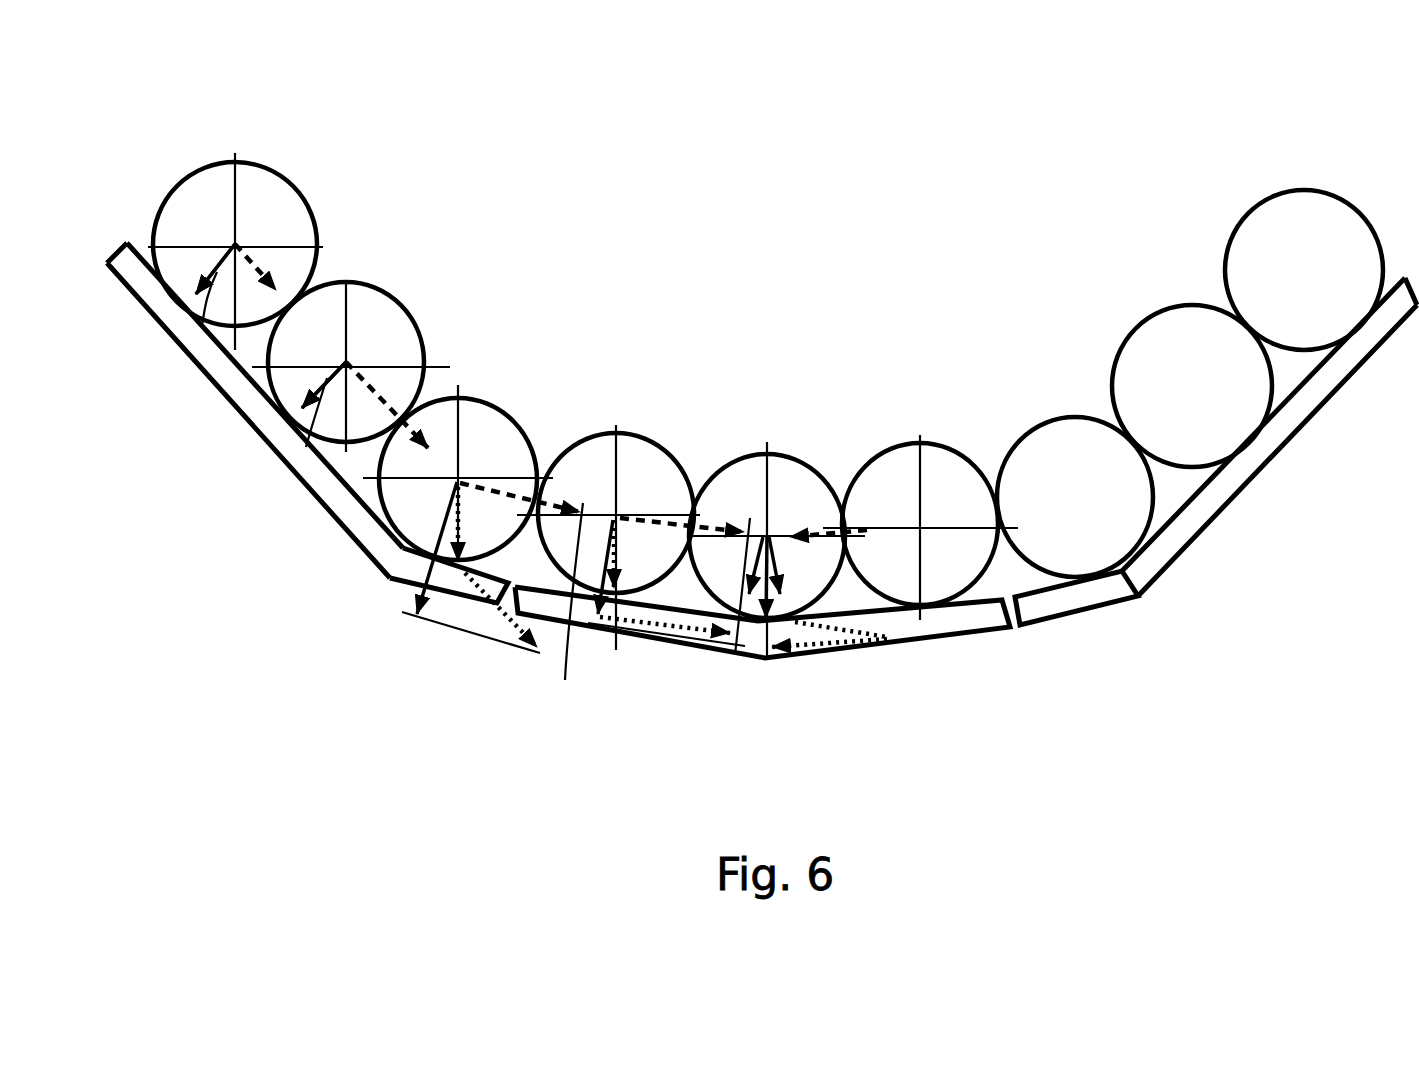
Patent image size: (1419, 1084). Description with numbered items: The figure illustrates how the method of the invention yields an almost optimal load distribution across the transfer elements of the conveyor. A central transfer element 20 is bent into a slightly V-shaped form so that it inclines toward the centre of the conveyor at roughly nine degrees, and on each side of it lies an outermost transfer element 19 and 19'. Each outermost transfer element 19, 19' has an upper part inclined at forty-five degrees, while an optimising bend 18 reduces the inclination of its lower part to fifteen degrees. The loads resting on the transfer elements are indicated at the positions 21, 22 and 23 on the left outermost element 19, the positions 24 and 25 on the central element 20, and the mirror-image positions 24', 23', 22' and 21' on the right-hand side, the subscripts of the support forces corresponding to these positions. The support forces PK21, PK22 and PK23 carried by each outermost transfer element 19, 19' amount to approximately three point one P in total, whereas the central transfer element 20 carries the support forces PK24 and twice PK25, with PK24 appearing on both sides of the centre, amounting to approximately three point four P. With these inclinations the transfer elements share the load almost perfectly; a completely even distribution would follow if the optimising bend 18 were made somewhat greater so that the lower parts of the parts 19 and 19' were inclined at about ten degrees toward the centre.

The optimising bend 18 is at (1138, 597).
The outermost transfer element 19 is at (255, 413).
The outermost transfer element 19' is at (1269, 437).
The central transfer element 20 is at (935, 620).
The outer roller 21 is at (255, 215).
The second roller 22 is at (372, 334).
The third roller 23 is at (475, 436).
The fourth roller 24 is at (630, 485).
The center roller 25 is at (775, 472).
The fourth roller (right side) 24' is at (920, 473).
The third roller (right side) 23' is at (1069, 431).
The second roller (right side) 22' is at (1175, 331).
The outer roller (right side) 21' is at (1289, 224).
The support force PK21 is at (200, 330).
The support force PK22 is at (305, 450).
The support force PK23 is at (398, 585).
The support force PK24 is at (566, 680).
The support force PK25 is at (780, 643).